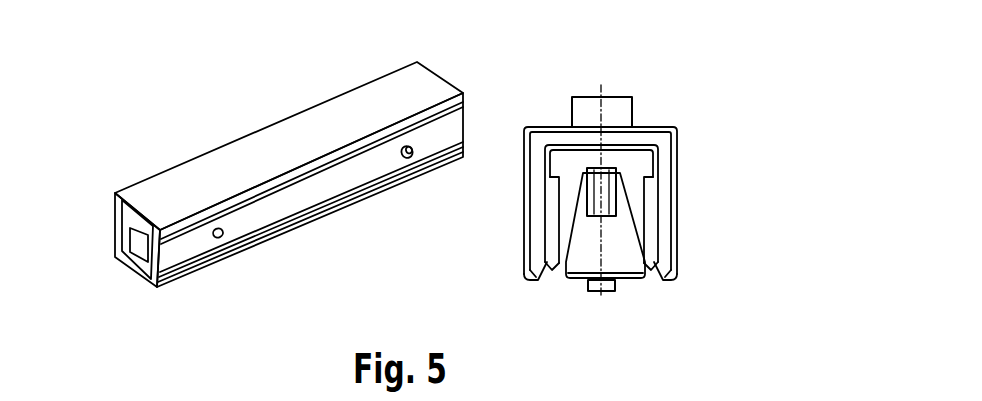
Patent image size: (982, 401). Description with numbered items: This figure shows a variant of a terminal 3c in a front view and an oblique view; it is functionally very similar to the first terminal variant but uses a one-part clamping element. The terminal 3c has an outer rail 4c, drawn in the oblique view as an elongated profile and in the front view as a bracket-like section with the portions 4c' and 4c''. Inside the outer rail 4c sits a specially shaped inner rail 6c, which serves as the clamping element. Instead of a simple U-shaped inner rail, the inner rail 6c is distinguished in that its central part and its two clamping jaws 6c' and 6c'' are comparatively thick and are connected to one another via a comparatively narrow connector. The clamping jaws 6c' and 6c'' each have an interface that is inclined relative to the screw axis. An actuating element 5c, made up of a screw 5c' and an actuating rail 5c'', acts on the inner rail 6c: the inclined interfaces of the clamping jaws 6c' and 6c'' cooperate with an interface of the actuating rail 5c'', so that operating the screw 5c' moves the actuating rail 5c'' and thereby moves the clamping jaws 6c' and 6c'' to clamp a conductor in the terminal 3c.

The terminal 3c is at (114, 84).
The outer rail 4c is at (477, 162).
The outer bracket of outer profile 4c' is at (643, 203).
The clamping piece of outer profile 4c'' is at (652, 225).
The actuating element 5c is at (691, 183).
The screw 5c' is at (652, 183).
The actuating rail 5c'' is at (403, 228).
The inner rail 6c is at (434, 149).
The clamping jaw 6c' is at (658, 152).
The clamping jaw 6c'' is at (676, 173).